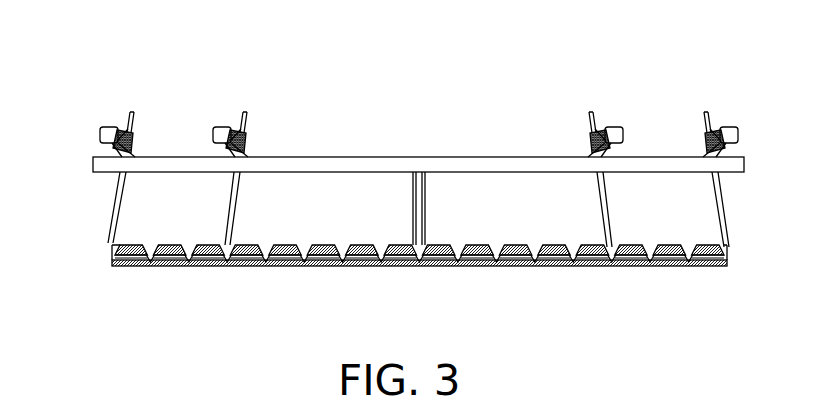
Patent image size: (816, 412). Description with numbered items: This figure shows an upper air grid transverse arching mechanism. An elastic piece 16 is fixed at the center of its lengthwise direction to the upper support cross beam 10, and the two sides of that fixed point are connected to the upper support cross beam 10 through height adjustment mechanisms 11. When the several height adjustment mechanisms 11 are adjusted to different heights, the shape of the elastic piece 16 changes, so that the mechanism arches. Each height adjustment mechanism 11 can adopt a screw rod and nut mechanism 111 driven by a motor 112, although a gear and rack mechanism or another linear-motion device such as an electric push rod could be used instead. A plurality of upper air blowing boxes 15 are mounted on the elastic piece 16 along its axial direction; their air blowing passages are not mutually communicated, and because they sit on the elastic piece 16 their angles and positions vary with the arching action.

The upper support cross beam 10 is at (162, 165).
The height adjustment mechanism 11 is at (128, 113).
The screw rod and nut mechanism 111 is at (250, 116).
The motor 112 is at (222, 133).
The upper air blowing box 15 is at (123, 266).
The elastic piece 16 is at (112, 249).